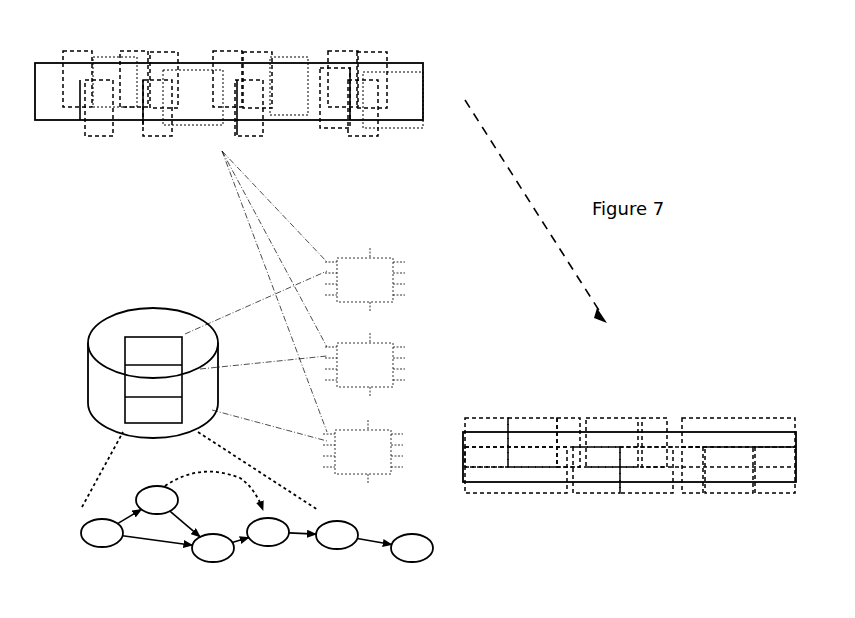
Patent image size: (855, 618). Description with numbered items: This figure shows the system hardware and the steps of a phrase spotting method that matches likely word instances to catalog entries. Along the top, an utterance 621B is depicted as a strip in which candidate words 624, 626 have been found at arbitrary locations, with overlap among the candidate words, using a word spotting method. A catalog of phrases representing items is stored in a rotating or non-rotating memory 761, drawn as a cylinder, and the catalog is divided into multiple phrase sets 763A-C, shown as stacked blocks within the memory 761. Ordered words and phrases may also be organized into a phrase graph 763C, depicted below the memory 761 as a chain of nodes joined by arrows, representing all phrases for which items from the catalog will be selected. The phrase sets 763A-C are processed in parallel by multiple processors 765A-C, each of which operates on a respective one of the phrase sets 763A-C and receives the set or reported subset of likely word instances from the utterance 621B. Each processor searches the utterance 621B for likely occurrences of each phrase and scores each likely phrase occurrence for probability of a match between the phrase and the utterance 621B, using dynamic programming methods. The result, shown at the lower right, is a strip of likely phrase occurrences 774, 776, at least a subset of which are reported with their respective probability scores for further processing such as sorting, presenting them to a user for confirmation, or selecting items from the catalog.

The candidate word 624 is at (80, 50).
The candidate word 626 is at (293, 57).
The utterance 621B is at (282, 140).
The multiple processors 765A-C is at (378, 257).
The memory 761 is at (137, 308).
The phrase sets 763A-C is at (160, 408).
The phrase graph 763C is at (147, 472).
The likely phrase occurrence 774 is at (537, 410).
The likely phrase occurrence 776 is at (593, 502).